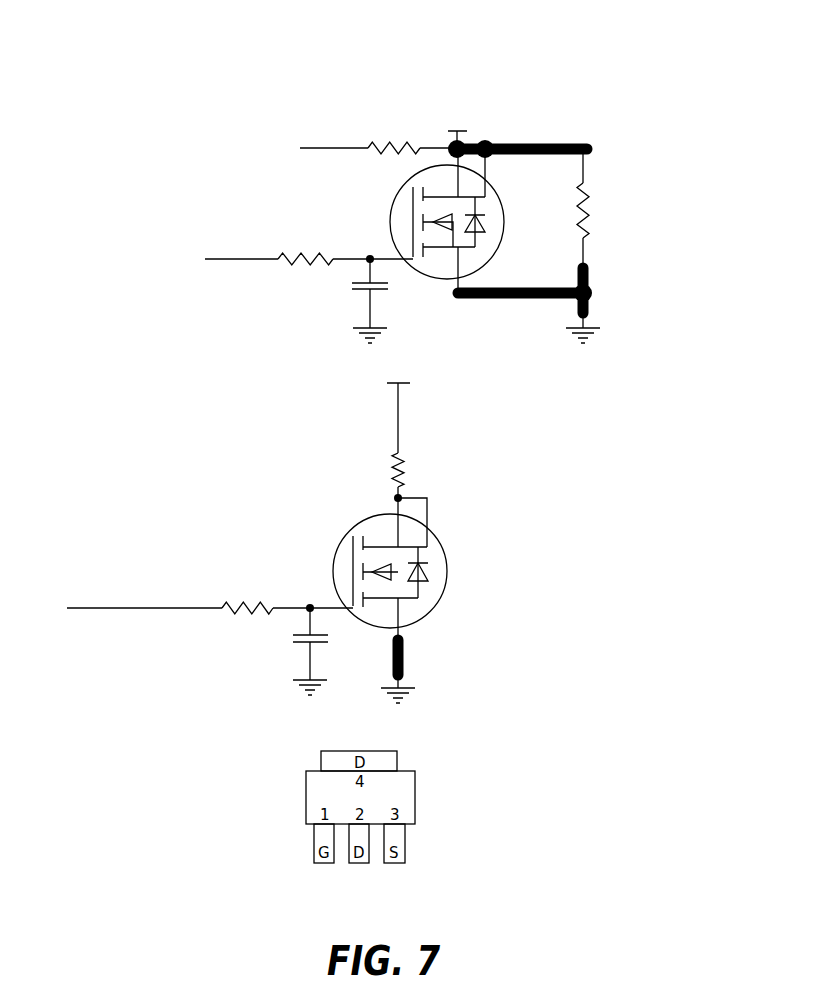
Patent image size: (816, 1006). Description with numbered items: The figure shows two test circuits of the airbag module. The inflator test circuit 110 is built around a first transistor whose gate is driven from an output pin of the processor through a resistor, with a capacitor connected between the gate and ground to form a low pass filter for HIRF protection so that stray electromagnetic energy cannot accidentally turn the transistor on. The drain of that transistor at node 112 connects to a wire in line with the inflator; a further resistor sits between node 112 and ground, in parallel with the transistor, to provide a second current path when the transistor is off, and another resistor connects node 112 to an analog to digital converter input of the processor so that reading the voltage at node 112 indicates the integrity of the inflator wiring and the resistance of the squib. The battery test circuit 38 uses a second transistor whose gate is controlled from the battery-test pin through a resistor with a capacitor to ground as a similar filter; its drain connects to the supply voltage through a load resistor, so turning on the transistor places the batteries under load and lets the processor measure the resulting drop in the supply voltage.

The inflator test circuit 110 is at (654, 83).
The node 112 is at (482, 141).
The battery test circuit 38 is at (326, 510).